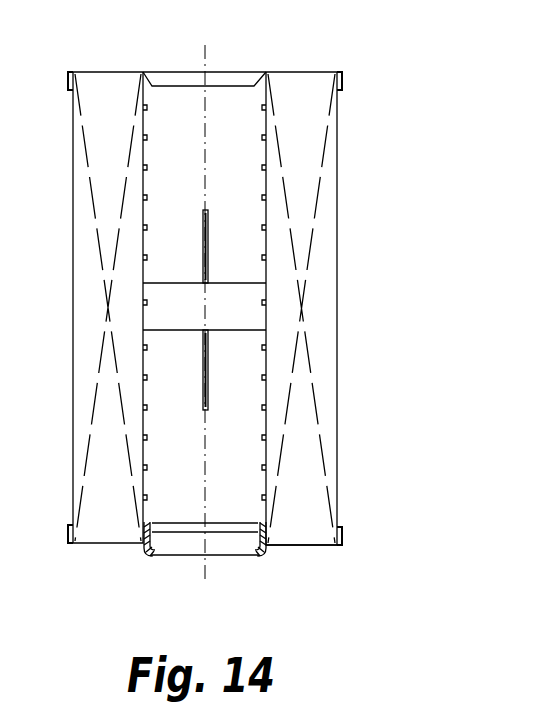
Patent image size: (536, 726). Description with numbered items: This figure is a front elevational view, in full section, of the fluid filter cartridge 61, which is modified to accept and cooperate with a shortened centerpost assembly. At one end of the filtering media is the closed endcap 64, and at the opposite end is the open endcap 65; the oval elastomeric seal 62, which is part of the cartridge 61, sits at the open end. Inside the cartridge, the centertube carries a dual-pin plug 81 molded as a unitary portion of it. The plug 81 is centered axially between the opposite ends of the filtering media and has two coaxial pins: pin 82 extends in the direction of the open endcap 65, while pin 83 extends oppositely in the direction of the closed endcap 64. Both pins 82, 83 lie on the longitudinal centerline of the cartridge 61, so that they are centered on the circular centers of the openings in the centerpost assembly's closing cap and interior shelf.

The fluid filter cartridge 61 is at (352, 325).
The oval elastomeric seal 62 is at (248, 556).
The closed endcap 64 is at (299, 72).
The open endcap 65 is at (320, 546).
The dual-pin plug 81 is at (228, 315).
The pin 82 is at (204, 378).
The pin 83 is at (208, 250).